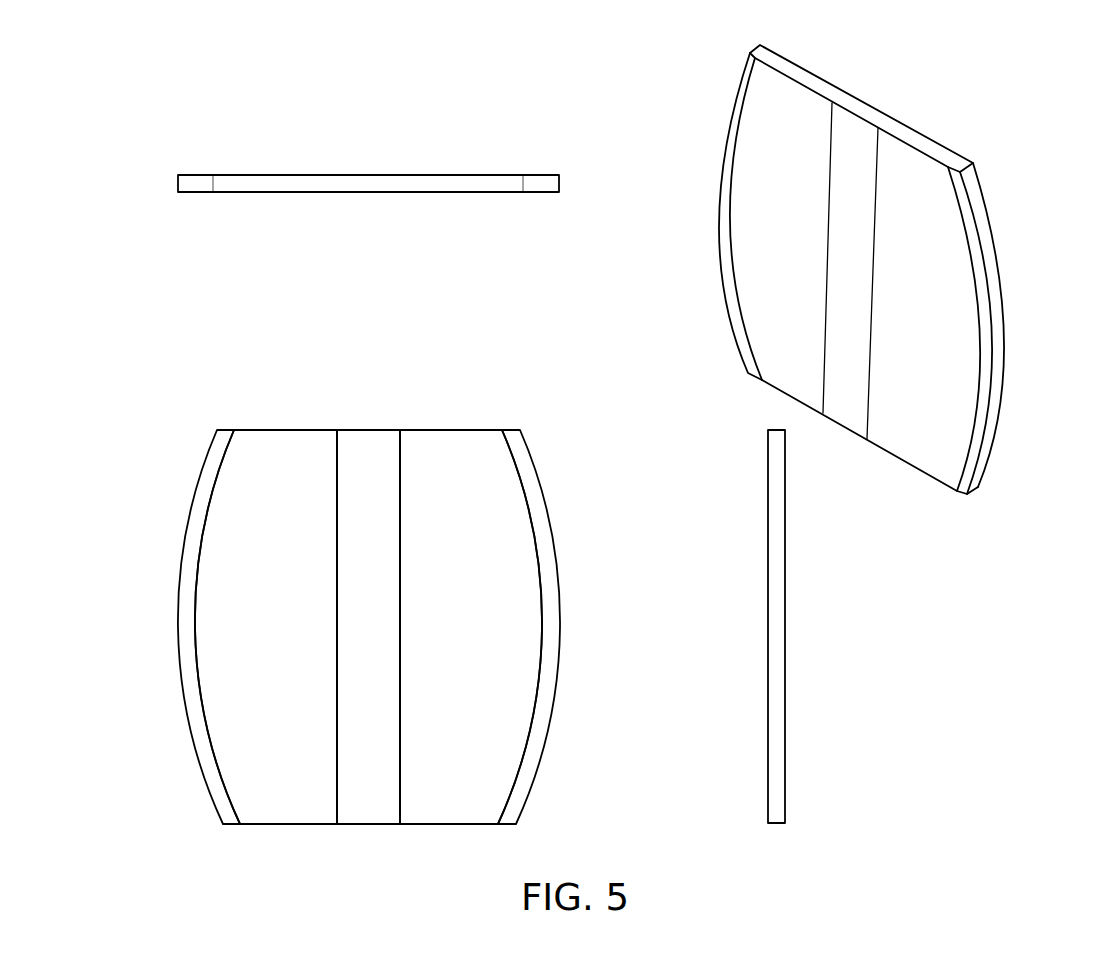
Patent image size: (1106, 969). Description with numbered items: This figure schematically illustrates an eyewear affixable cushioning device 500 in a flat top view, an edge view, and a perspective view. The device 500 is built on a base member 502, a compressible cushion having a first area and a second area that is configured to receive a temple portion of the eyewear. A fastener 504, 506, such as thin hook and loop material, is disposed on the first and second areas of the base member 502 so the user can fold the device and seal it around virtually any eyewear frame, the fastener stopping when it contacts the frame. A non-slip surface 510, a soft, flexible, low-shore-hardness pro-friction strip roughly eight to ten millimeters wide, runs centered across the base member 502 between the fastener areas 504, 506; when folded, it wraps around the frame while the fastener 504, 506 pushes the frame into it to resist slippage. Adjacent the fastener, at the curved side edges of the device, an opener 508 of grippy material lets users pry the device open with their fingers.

The eyewear affixable cushioning device 500 is at (956, 66).
The base member 502 is at (375, 183).
The fastener 504 is at (276, 447).
The fastener 506 is at (453, 447).
The opener 508 is at (205, 494).
The non-slip surface 510 is at (366, 447).